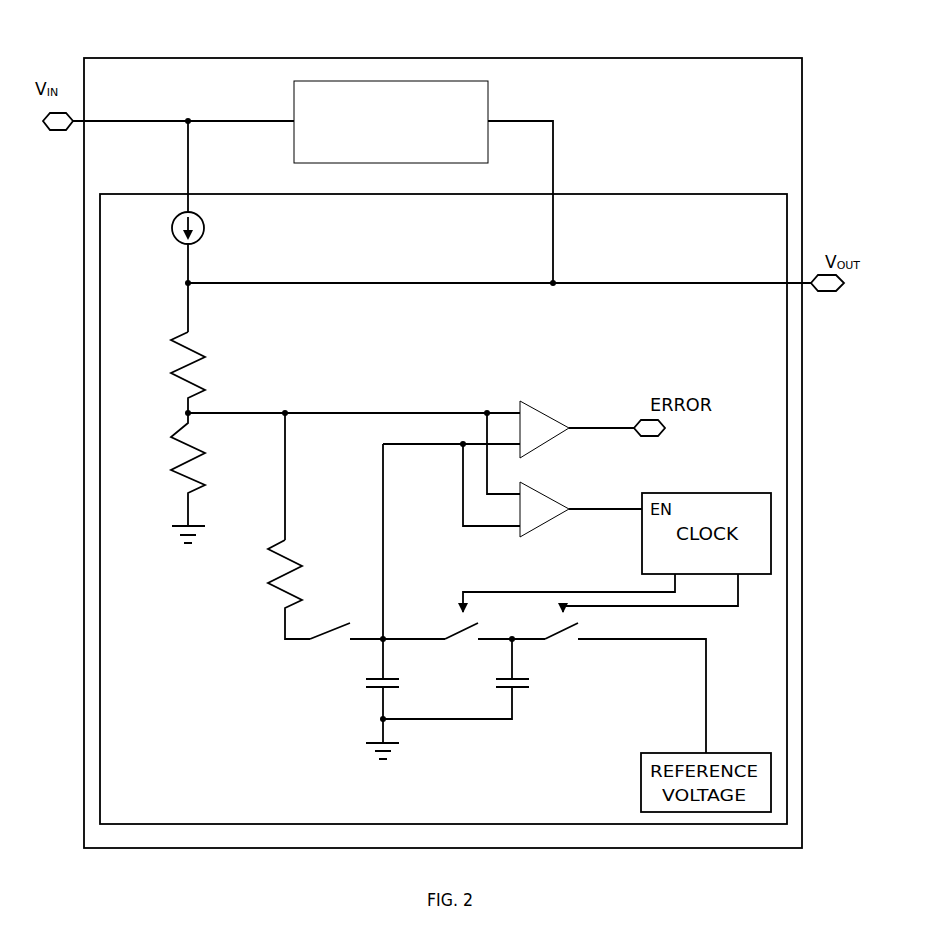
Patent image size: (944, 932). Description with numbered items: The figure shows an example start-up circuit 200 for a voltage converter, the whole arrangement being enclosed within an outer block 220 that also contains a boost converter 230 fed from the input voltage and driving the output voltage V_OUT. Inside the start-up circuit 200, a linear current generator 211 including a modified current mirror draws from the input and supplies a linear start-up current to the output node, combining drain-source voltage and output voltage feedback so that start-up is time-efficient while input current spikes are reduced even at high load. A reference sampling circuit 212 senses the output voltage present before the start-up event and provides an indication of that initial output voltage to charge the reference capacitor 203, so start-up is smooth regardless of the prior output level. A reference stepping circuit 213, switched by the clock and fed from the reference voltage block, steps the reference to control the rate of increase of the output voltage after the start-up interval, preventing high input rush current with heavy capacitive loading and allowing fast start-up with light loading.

The power supply system 220 is at (603, 57).
The start-up circuit 200 is at (643, 193).
The boost converter 230 is at (489, 98).
The linear current generator 211 is at (150, 225).
The reference sampling circuit 212 is at (240, 622).
The reference capacitor 203 is at (340, 692).
The reference stepping circuit 213 is at (510, 756).